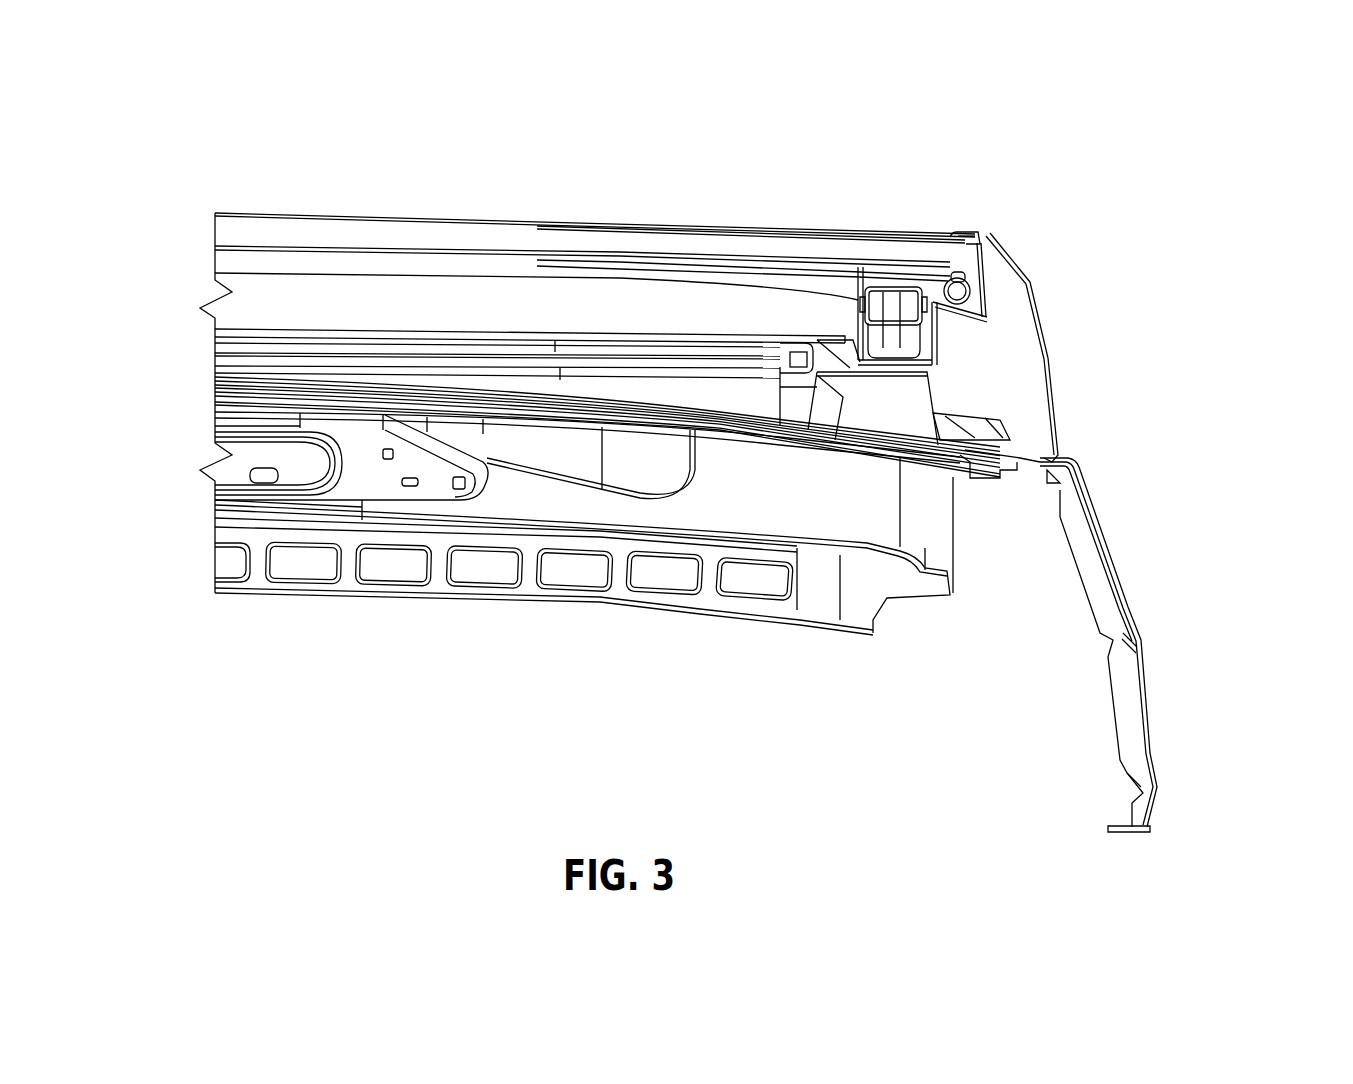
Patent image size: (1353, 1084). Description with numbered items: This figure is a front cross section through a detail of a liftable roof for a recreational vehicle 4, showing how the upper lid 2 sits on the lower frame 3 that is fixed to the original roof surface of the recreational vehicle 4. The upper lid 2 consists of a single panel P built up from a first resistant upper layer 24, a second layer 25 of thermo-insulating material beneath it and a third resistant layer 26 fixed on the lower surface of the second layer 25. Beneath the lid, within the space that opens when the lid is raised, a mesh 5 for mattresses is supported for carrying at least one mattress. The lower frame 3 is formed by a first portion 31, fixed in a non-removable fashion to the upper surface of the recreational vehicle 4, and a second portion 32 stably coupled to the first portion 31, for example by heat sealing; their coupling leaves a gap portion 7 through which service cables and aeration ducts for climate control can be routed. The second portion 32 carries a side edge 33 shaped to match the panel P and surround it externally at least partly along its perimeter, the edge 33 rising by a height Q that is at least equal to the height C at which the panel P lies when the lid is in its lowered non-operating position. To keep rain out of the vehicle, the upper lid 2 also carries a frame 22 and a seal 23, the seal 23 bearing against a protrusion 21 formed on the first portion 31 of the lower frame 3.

The upper lid 2 is at (360, 190).
The lower frame 3 is at (1137, 347).
The recreational vehicle 4 is at (1026, 647).
The mesh for mattresses 5 is at (323, 361).
The gap portion 7 is at (862, 415).
The protrusion 21 is at (964, 325).
The frame 22 is at (967, 228).
The seal 23 is at (968, 298).
The first resistant upper layer 24 is at (565, 222).
The second layer of thermo-insulating material 25 is at (625, 238).
The third resistant layer 26 is at (667, 250).
The first portion 31 is at (1020, 463).
The second portion 32 is at (1052, 358).
The side edge 33 is at (1034, 281).
The panel P is at (213, 205).
The height of the edge Q is at (994, 237).
The height of the panel C is at (992, 248).